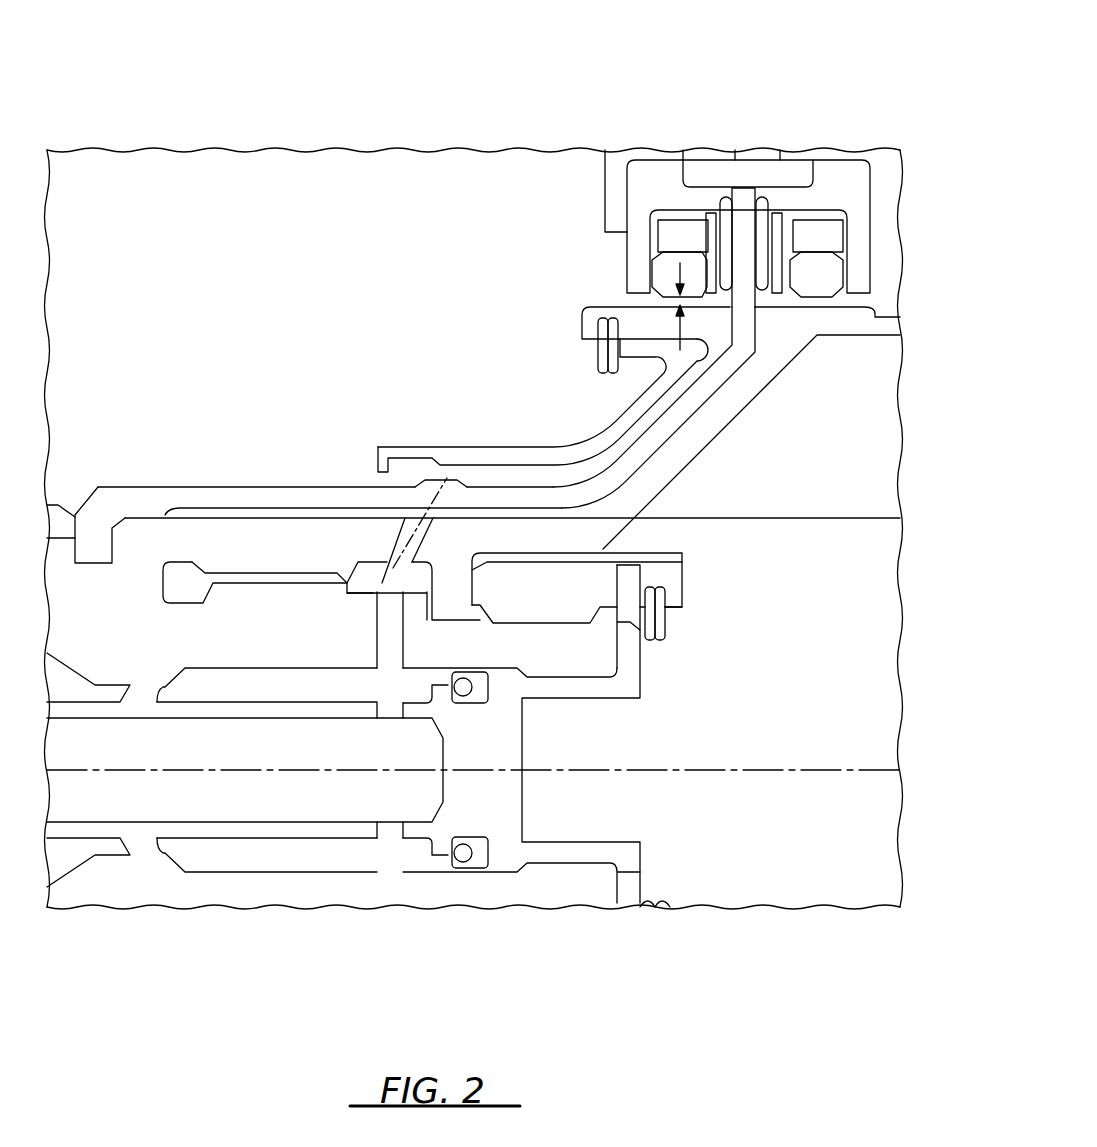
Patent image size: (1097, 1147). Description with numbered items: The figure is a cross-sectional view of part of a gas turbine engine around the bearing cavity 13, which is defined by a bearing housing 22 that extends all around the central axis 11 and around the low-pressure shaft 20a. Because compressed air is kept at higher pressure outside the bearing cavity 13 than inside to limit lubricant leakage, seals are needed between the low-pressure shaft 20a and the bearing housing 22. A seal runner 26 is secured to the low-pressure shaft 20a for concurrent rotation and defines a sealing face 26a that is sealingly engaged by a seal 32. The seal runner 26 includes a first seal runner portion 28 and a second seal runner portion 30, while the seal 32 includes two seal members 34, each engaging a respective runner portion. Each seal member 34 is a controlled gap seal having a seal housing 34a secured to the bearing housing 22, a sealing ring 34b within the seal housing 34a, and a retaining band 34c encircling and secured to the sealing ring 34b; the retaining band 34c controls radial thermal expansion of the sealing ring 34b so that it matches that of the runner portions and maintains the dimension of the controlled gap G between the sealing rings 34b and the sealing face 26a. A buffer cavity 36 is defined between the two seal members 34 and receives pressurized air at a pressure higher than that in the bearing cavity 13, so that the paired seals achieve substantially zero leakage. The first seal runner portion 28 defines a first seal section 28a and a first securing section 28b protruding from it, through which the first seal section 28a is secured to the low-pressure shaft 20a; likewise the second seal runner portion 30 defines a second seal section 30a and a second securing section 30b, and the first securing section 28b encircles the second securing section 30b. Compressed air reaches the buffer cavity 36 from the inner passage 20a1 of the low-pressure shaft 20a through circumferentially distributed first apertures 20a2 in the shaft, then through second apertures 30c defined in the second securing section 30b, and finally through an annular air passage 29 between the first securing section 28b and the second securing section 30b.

The central axis 11 is at (123, 772).
The bearing cavity 13 is at (292, 252).
The low-pressure shaft 20a is at (233, 832).
The inner passage 20a1 is at (308, 759).
The first apertures 20a2 is at (388, 707).
The bearing housing 22 is at (614, 170).
The seal runner 26 is at (781, 450).
The sealing face 26a is at (885, 310).
The first seal runner portion 28 is at (627, 470).
The first seal section 28a is at (648, 322).
The first securing section 28b is at (232, 498).
The annular air passage 29 is at (617, 497).
The second seal runner portion 30 is at (660, 474).
The second seal section 30a is at (828, 322).
The second securing section 30b is at (288, 543).
The second apertures 30c is at (386, 545).
The seal 32 is at (907, 110).
The seal members 34 is at (688, 135).
The seal housing 34a is at (853, 192).
The sealing ring 34b is at (830, 275).
The retaining band 34c is at (820, 232).
The buffer cavity 36 is at (748, 236).
The controlled gap G is at (672, 277).